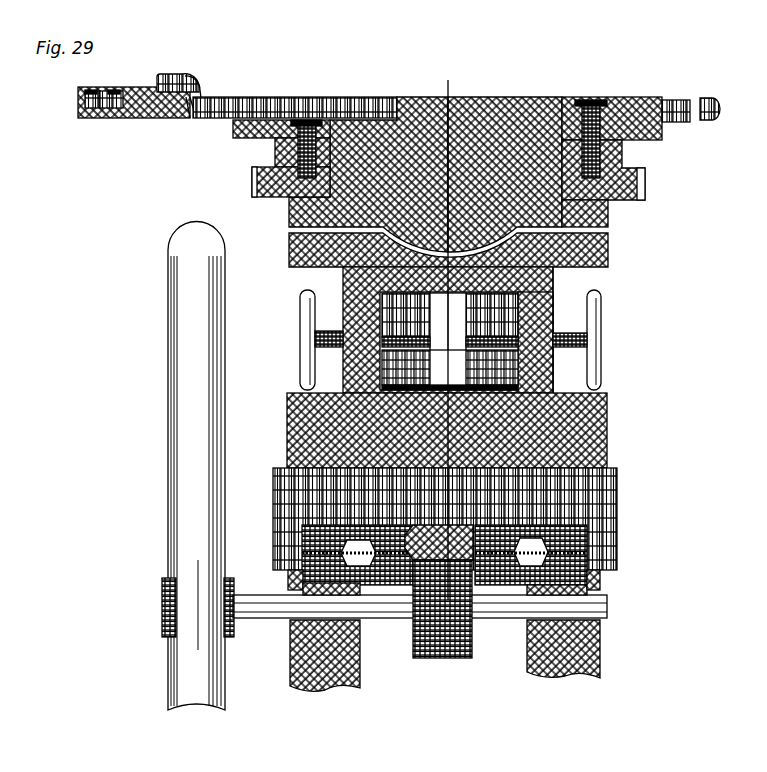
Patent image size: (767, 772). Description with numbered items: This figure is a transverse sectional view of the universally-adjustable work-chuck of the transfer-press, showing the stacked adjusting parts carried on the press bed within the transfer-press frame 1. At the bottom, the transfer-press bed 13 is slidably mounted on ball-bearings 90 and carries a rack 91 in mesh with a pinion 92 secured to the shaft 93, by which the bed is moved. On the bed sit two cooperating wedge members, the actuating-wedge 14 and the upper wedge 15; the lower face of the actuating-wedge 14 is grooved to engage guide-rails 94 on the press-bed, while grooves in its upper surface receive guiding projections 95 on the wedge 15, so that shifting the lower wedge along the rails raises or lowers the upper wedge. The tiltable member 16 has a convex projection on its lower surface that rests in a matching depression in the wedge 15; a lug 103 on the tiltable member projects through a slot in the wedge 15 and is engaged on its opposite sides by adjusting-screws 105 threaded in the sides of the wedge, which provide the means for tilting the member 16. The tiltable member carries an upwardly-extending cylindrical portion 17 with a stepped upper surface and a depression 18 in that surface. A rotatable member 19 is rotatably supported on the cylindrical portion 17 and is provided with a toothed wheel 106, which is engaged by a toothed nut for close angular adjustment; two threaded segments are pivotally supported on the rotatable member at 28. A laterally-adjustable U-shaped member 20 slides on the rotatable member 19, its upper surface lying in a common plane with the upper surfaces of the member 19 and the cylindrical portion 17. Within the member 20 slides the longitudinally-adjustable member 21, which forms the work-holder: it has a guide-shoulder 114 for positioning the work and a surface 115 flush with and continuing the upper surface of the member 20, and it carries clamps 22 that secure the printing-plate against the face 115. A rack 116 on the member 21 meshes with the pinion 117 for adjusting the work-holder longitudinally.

The transfer-press frame 1 is at (590, 641).
The transfer-press bed 13 is at (603, 501).
The actuating-wedge 14 is at (538, 370).
The upper wedge 15 is at (556, 278).
The tiltable member 16 is at (609, 228).
The cylindrical portion 17 is at (528, 112).
The depression 18 is at (365, 118).
The rotatable member 19 is at (637, 110).
The laterally-adjustable U-shaped member 20 is at (272, 104).
The longitudinally-adjustable member 21 is at (150, 98).
The clamps 22 is at (188, 83).
The pivot of threaded segments 28 is at (655, 481).
The ball-bearings 90 is at (526, 568).
The rack 91 is at (412, 586).
The pinion 92 is at (447, 652).
The shaft 93 is at (372, 622).
The guide-rails 94 is at (607, 404).
The guiding projections 95 is at (555, 336).
The lug 103 is at (460, 355).
The adjusting-screws 105 is at (320, 331).
The toothed wheel 106 is at (610, 206).
The guide-shoulder 114 is at (201, 100).
The surface 115 is at (190, 110).
The rack 116 is at (128, 110).
The pinion 117 is at (98, 110).